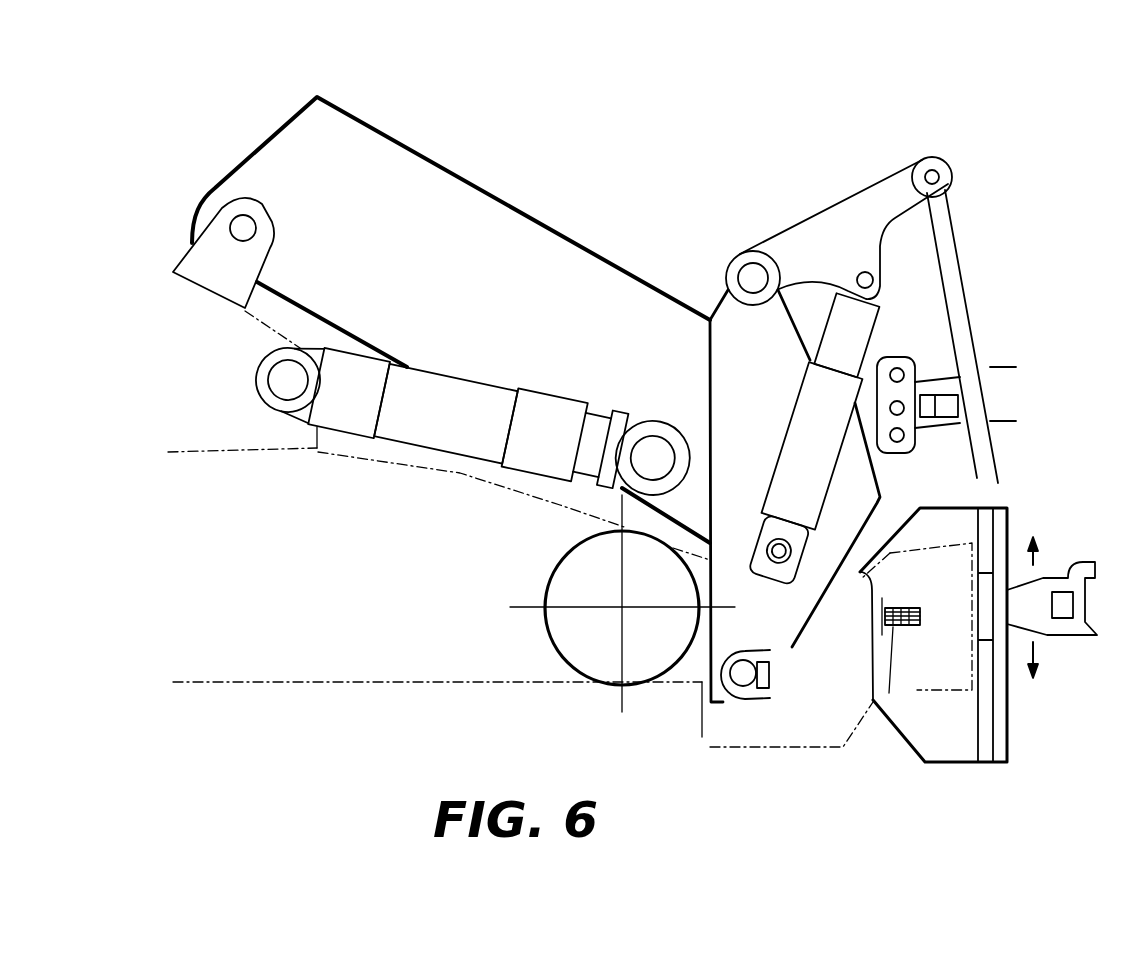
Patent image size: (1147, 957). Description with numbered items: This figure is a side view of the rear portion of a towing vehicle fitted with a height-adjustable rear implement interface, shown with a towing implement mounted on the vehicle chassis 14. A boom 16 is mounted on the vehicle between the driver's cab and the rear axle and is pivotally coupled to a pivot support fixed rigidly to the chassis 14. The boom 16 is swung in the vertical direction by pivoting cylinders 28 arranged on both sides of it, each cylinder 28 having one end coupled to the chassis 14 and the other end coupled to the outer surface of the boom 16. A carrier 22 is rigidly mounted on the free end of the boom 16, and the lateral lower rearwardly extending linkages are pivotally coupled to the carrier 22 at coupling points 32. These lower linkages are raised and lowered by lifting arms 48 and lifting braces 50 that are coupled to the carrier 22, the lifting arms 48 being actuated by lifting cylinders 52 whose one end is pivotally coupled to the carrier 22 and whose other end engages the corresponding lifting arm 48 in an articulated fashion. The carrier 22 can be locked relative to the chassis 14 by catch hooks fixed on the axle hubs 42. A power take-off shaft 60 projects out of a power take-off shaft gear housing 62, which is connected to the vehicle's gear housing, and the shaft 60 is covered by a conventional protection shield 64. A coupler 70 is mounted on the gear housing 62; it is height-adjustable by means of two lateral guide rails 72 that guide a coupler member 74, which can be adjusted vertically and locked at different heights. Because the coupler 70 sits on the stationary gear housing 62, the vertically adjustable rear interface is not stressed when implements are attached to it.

The chassis 14 is at (238, 665).
The boom 16 is at (500, 203).
The carrier 22 is at (743, 358).
The pivoting cylinder 28 is at (452, 420).
The coupling point 32 is at (737, 687).
The axle hub 42 is at (560, 660).
The lifting arm 48 is at (833, 240).
The lifting brace 50 is at (967, 332).
The lifting cylinder 52 is at (825, 400).
The power take-off shaft 60 is at (896, 722).
The power take-off shaft gear housing 62 is at (822, 732).
The power take-off shaft protection shield 64 is at (950, 693).
The coupler 70 is at (991, 639).
The guide rail 72 is at (952, 525).
The coupler member 74 is at (1035, 597).